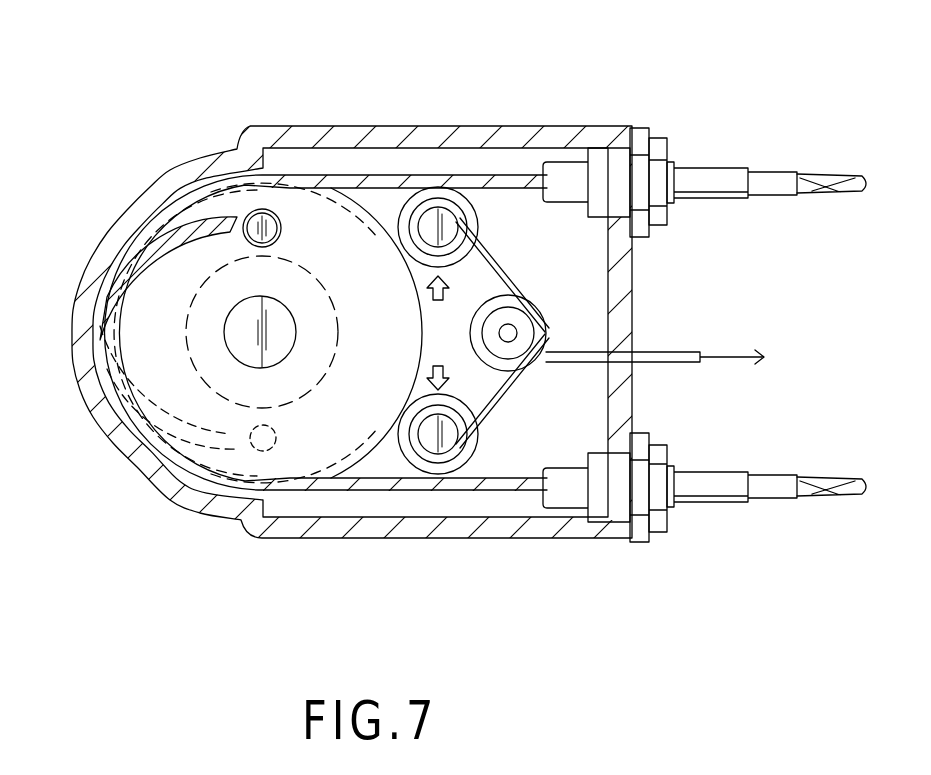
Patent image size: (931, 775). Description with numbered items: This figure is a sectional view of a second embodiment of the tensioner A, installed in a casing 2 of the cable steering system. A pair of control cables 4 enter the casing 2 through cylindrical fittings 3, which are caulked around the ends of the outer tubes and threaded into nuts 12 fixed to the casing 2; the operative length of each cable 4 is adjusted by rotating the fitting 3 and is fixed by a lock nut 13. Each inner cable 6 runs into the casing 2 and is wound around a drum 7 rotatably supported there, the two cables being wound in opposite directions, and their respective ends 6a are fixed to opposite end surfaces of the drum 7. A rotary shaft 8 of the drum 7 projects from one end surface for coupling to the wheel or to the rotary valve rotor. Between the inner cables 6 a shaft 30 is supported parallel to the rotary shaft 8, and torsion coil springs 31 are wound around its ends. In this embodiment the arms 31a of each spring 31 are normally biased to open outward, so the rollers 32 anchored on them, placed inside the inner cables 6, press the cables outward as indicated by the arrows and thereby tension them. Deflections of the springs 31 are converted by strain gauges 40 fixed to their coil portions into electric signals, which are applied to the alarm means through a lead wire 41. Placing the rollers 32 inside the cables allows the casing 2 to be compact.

The casing 2 is at (406, 147).
The cylindrical fitting 3 is at (702, 204).
The control cable 4 is at (741, 129).
The inner cable 6 is at (158, 265).
The end of inner cable 6a is at (253, 213).
The drum 7 is at (304, 440).
The rotary shaft 8 is at (193, 367).
The nut 12 is at (636, 130).
The lock nut 13 is at (670, 140).
The shaft 30 is at (547, 305).
The torsion coil spring 31 is at (515, 385).
The arm 31a is at (500, 256).
The roller 32 is at (404, 208).
The strain gauge 40 is at (525, 335).
The lead wire 41 is at (730, 356).
The tensioner A is at (491, 195).